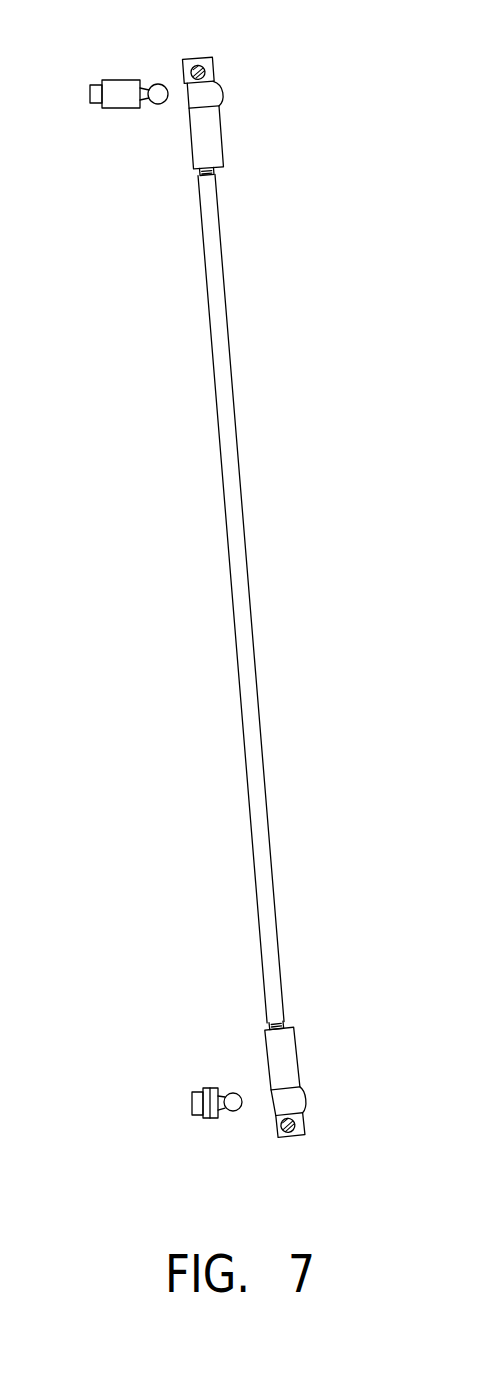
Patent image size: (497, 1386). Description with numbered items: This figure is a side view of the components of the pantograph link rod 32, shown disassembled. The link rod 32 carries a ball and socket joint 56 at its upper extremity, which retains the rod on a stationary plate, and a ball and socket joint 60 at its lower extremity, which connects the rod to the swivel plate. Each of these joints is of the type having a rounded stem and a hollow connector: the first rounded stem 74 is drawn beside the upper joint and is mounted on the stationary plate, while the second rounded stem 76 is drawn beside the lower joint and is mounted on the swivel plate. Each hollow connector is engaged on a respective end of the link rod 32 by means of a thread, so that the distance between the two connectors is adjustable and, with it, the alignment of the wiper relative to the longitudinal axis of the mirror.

The ball and socket joint 56 is at (116, 195).
The pantograph link rod 32 is at (247, 548).
The first rounded stem 74 is at (118, 80).
The ball and socket joint 60 is at (180, 982).
The second rounded stem 76 is at (208, 1088).